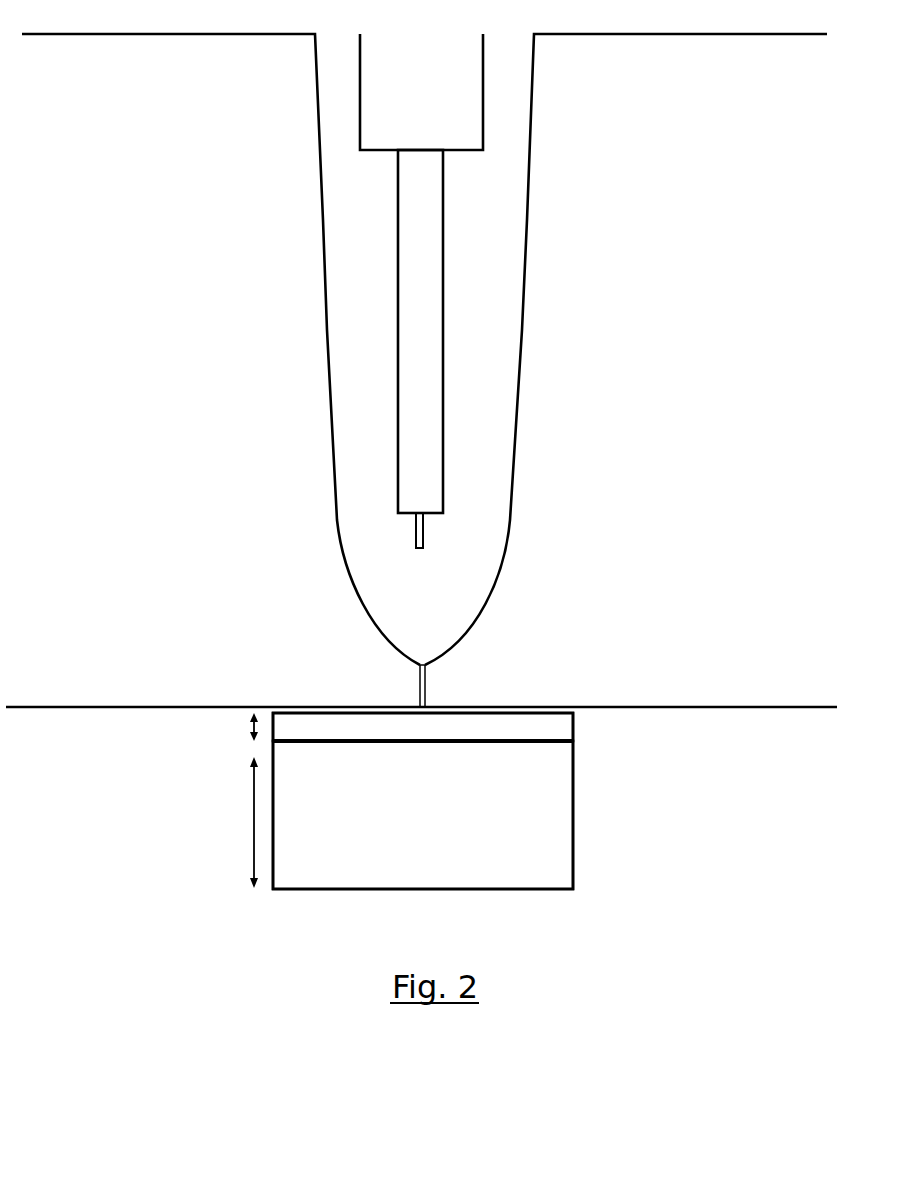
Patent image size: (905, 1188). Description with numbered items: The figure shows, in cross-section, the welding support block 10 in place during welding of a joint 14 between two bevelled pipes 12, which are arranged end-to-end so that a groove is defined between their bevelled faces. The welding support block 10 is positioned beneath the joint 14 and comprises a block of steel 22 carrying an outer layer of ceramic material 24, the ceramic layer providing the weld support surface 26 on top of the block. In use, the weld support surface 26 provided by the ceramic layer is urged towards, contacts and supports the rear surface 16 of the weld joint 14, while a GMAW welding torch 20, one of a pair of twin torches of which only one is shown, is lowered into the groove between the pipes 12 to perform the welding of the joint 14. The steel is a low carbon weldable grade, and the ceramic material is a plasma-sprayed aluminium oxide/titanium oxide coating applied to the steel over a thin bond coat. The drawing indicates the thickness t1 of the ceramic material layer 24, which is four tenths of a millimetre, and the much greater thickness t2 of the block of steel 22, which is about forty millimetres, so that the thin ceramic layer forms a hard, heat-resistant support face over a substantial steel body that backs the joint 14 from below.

The welding support block 10 is at (467, 830).
The bevelled pipes 12 is at (133, 330).
The joint 14 is at (422, 650).
The rear surface 16 is at (424, 722).
The GMAW welding torch 20 is at (427, 250).
The block of steel 22 is at (550, 803).
The outer layer of ceramic material 24 is at (560, 728).
The weld support surface 26 is at (512, 700).
The thickness of ceramic material layer t1 is at (243, 723).
The thickness of steel layer t2 is at (245, 818).